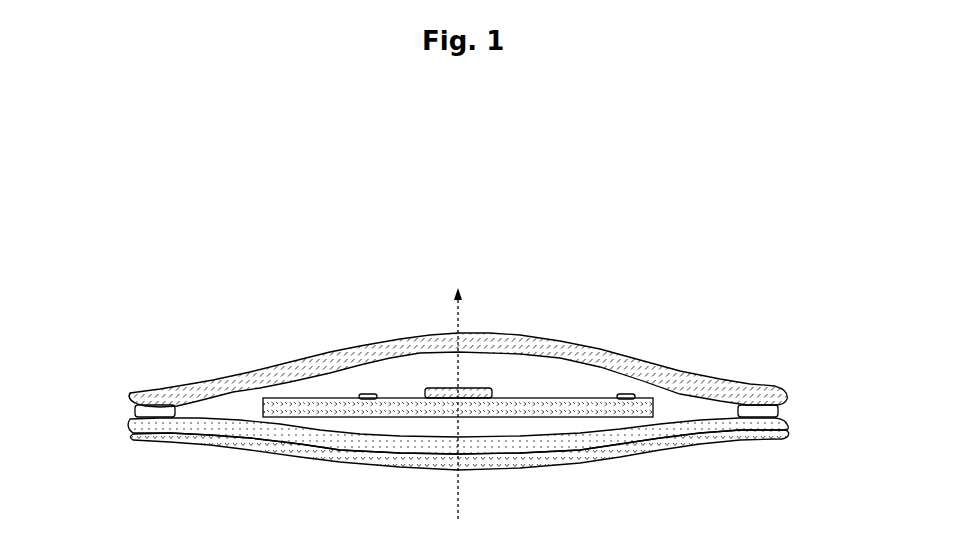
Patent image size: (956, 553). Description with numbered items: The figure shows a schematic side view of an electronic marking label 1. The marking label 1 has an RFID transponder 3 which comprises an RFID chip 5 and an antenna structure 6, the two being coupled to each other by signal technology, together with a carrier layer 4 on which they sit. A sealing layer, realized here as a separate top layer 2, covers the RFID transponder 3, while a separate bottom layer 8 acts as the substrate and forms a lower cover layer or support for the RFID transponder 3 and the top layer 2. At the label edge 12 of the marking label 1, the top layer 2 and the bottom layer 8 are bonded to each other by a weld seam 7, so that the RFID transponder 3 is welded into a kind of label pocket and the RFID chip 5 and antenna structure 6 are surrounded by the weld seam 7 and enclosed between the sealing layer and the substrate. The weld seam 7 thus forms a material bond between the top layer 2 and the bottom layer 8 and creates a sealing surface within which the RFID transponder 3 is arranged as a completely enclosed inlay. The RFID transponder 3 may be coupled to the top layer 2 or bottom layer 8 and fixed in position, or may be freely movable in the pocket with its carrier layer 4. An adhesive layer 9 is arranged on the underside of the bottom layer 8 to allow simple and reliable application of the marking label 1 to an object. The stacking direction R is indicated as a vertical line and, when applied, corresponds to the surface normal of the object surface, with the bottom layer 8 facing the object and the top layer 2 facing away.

The marking label 1 is at (118, 255).
The top layer 2 is at (225, 385).
The RFID transponder 3 is at (540, 372).
The carrier layer 4 is at (317, 410).
The RFID chip 5 is at (430, 388).
The antenna structure 6 is at (365, 393).
The weld seam 7 is at (153, 414).
The bottom layer 8 is at (615, 437).
The adhesive layer 9 is at (685, 442).
The label edge 12 is at (143, 374).
The stacking direction R is at (462, 317).